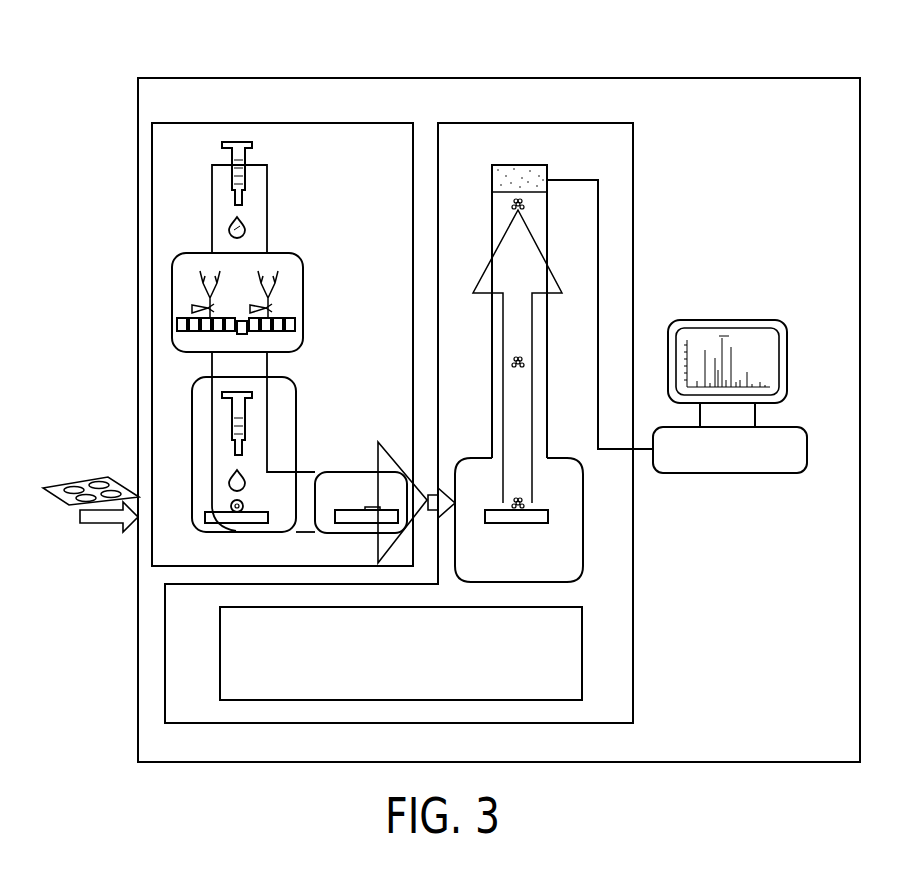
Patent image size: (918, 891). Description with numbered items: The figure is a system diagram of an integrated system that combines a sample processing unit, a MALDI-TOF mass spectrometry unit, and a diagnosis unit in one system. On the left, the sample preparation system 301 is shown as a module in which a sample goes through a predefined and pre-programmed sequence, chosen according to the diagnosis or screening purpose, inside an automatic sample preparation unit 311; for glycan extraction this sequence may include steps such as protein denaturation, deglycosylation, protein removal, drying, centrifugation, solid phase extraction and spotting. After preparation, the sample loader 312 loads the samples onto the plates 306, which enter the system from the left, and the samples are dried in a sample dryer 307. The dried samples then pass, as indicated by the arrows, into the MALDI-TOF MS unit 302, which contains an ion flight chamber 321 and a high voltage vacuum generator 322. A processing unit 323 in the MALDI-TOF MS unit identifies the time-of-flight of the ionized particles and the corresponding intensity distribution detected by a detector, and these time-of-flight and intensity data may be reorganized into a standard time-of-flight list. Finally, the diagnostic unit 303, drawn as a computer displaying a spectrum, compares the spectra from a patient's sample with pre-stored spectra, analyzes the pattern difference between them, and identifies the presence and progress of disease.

The sample preparation system 301 is at (152, 157).
The MALDI-TOF MS unit 302 is at (634, 612).
The diagnostic unit 303 is at (728, 320).
The plates 306 is at (56, 501).
The sample dryer 307 is at (337, 486).
The automatic sample preparation unit 311 is at (172, 306).
The sample loader 312 is at (192, 432).
The ion flight chamber 321 is at (583, 532).
The high voltage vacuum generator 322 is at (582, 655).
The processing unit 323 is at (548, 171).